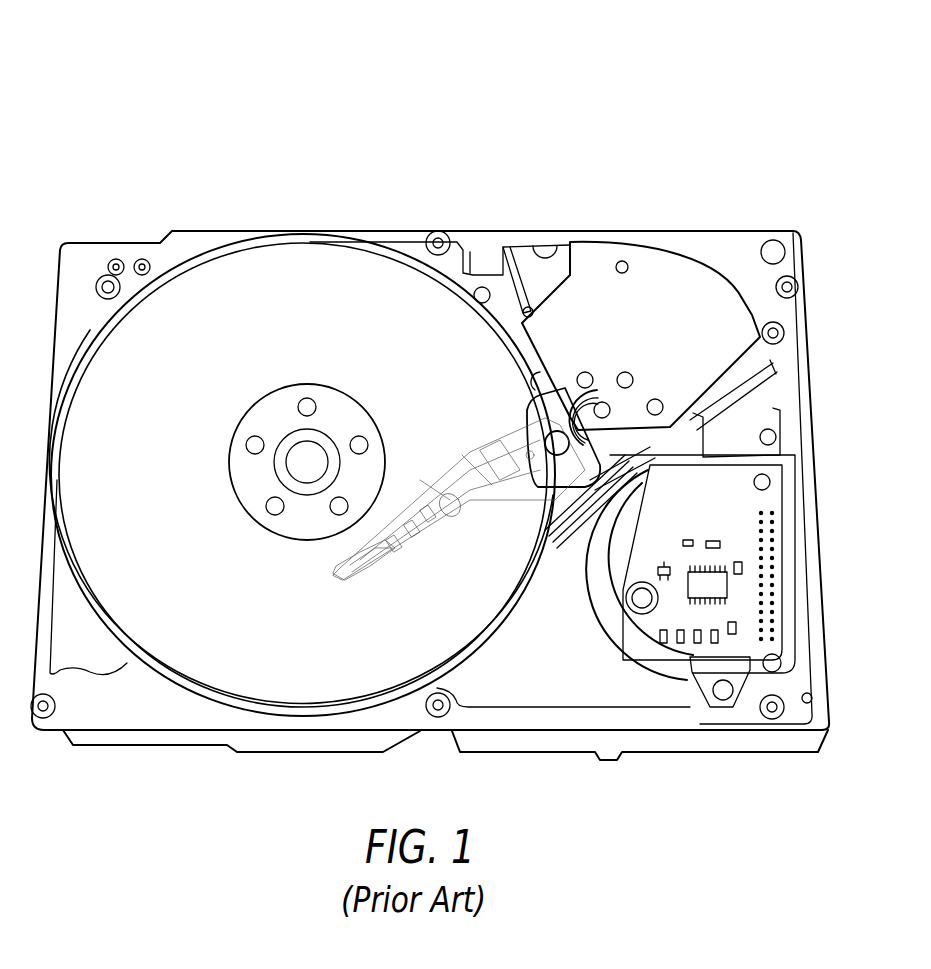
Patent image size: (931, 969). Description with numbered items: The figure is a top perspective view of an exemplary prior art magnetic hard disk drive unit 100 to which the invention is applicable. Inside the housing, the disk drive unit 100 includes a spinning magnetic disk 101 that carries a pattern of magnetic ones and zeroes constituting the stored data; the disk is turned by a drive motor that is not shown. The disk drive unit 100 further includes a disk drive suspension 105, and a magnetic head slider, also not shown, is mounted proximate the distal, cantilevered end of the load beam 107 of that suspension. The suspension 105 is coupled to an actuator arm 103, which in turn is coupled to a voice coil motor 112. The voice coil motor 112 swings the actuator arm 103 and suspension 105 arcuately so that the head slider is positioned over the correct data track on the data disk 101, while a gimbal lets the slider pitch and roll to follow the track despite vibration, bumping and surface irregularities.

The disk drive unit 100 is at (313, 190).
The magnetic disk 101 is at (258, 290).
The actuator arm 103 is at (573, 473).
The disk drive suspension 105 is at (378, 586).
The load beam 107 is at (427, 497).
The voice coil motor 112 is at (637, 330).